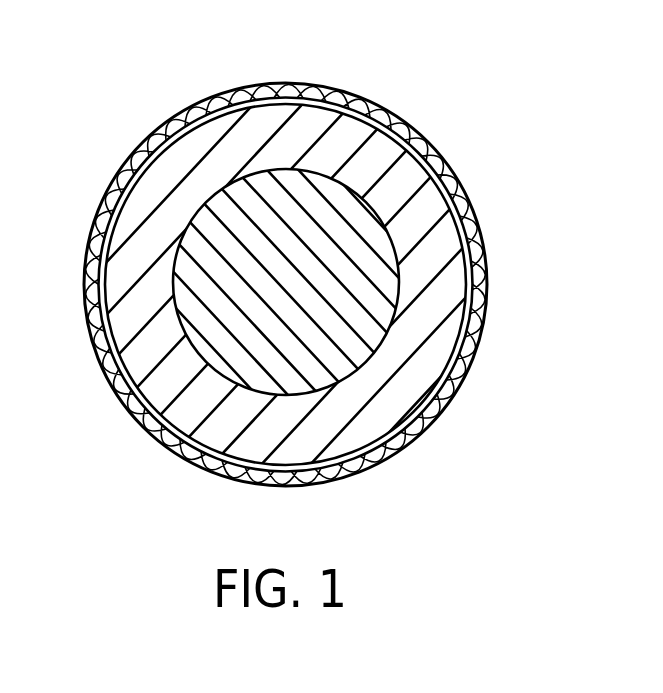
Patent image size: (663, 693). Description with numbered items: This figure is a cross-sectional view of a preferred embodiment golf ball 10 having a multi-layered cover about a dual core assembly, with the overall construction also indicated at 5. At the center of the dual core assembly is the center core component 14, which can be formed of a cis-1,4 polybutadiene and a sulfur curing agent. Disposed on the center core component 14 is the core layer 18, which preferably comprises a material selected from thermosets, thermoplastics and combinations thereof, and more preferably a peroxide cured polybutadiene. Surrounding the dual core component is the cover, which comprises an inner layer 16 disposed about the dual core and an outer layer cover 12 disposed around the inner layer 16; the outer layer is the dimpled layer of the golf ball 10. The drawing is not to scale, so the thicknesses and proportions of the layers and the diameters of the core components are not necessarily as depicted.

The golf ball 10 is at (331, 346).
The braided outer jacket 5 is at (160, 118).
The outer layer cover 12 is at (481, 337).
The inner layer 16 is at (178, 148).
The core layer 18 is at (187, 398).
The center core component 14 is at (353, 327).